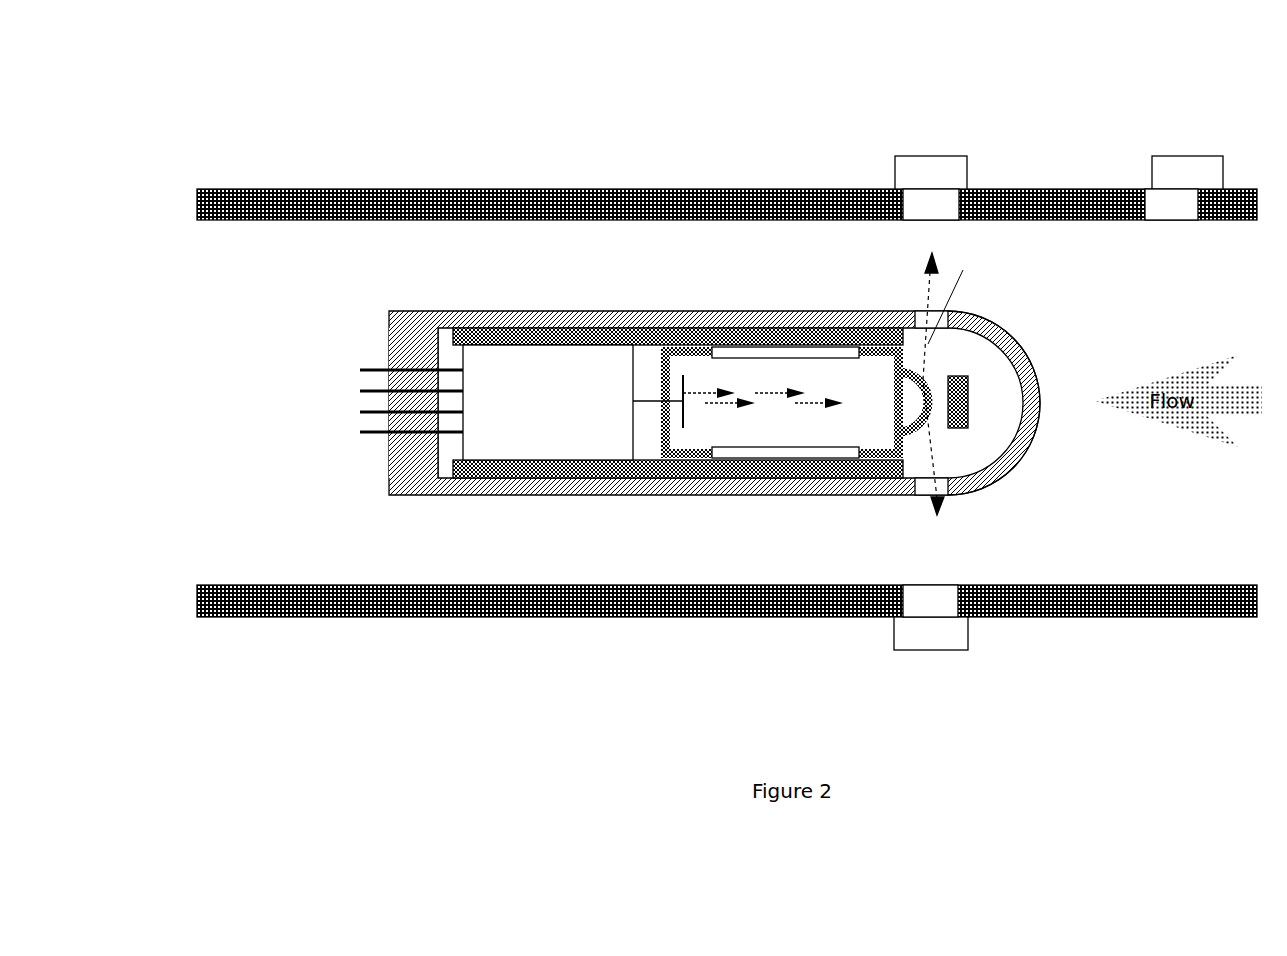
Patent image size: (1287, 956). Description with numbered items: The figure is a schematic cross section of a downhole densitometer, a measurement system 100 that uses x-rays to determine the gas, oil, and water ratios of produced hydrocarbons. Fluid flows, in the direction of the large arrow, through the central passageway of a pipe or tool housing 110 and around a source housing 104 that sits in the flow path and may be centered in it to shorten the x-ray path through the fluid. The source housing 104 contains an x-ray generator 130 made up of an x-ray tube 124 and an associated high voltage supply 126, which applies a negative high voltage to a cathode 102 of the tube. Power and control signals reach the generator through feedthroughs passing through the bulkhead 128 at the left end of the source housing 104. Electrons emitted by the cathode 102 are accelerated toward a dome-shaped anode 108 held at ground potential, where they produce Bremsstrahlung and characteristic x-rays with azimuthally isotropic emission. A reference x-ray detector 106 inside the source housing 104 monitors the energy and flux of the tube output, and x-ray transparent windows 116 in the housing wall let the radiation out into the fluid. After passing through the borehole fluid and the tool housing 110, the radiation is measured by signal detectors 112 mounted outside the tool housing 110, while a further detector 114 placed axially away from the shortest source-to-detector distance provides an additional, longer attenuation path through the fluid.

The measurement system 100 is at (563, 158).
The cathode 102 is at (682, 425).
The source housing 104 is at (858, 311).
The reference x-ray detector 106 is at (953, 383).
The anode 108 is at (990, 490).
The tool housing 110 is at (335, 618).
The signal detector 112 is at (925, 165).
The detector 114 is at (1190, 162).
The x-ray window 116 is at (923, 507).
The x-ray tube 124 is at (773, 373).
The high voltage supply 126 is at (567, 420).
The bulkhead 128 is at (391, 312).
The x-ray generator 130 is at (802, 510).